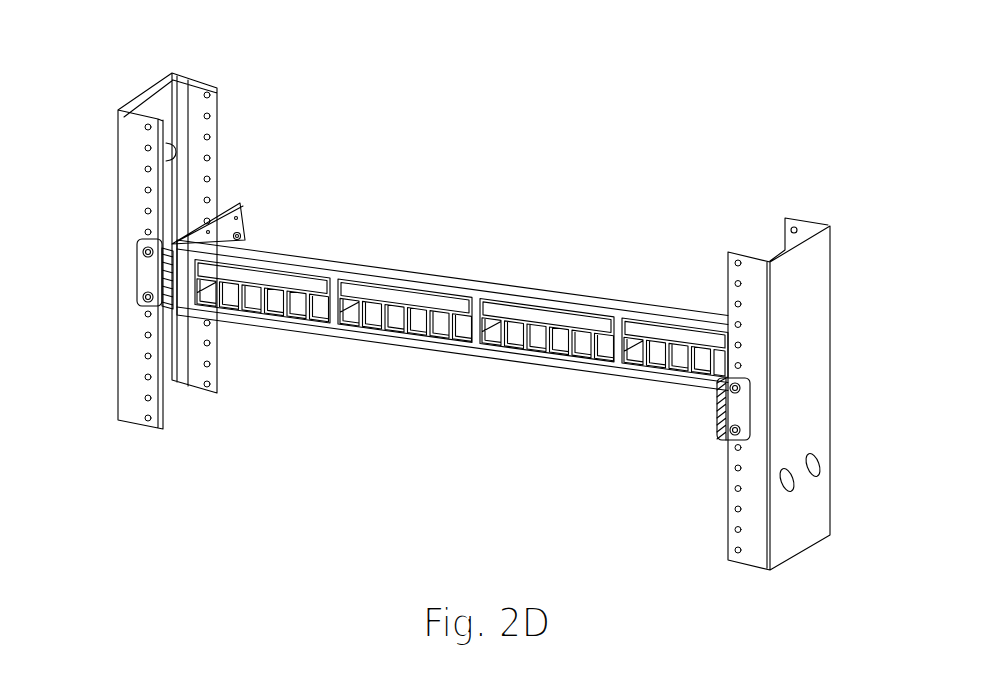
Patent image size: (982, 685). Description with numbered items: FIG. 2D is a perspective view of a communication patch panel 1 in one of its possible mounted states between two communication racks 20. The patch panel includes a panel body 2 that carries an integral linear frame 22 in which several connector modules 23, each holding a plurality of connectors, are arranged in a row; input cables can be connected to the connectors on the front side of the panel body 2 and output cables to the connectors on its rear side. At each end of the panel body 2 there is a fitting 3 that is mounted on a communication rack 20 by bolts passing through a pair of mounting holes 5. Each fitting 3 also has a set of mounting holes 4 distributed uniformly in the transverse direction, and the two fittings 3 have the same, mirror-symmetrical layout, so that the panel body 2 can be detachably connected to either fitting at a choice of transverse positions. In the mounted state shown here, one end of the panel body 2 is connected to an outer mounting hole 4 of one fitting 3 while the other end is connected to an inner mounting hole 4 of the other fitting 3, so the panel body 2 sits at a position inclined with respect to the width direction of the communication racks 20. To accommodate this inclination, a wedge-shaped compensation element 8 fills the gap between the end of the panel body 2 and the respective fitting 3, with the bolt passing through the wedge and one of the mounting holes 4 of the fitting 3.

The communication patch panel 1 is at (475, 300).
The panel body 2 is at (572, 292).
The fitting 3 is at (248, 210).
The mounting hole 4 is at (241, 236).
The mounting hole for bolts 5 is at (136, 246).
The compensation element 8 is at (177, 300).
The communication rack 20 is at (162, 100).
The linear frame 22 is at (685, 310).
The connector module 23 is at (557, 343).